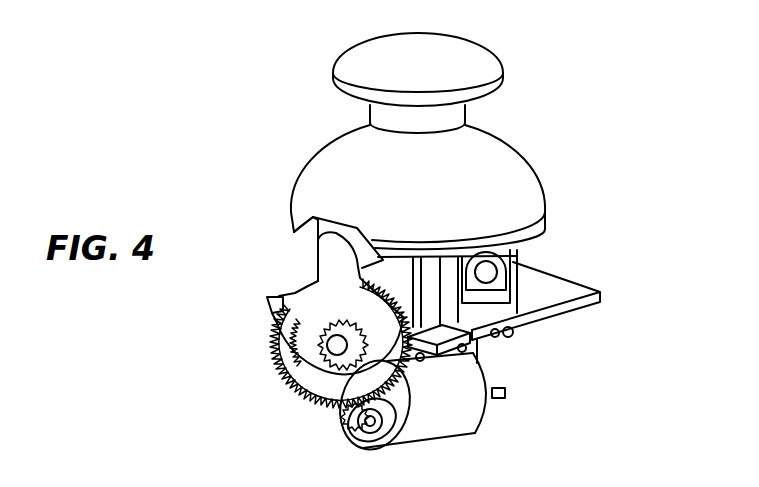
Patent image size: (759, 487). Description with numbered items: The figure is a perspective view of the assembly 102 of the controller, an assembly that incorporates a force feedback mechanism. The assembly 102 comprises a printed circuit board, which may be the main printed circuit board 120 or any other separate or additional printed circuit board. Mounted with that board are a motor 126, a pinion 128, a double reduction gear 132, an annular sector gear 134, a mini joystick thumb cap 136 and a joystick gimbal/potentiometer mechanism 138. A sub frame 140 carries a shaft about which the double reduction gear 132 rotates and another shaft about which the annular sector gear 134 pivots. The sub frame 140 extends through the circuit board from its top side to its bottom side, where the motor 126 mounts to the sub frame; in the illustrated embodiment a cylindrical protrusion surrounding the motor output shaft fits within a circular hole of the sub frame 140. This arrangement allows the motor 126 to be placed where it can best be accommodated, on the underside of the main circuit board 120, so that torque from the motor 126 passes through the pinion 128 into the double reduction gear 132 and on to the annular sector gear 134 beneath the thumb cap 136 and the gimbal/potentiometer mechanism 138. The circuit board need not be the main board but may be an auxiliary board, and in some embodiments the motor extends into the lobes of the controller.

The assembly 102 is at (538, 36).
The main printed circuit board 120 is at (537, 317).
The motor 126 is at (450, 420).
The pinion 128 is at (343, 418).
The double reduction gear 132 is at (320, 385).
The annular sector gear 134 is at (342, 268).
The mini joystick thumb cap 136 is at (373, 45).
The joystick gimbal/potentiometer mechanism 138 is at (513, 273).
The sub frame 140 is at (370, 445).